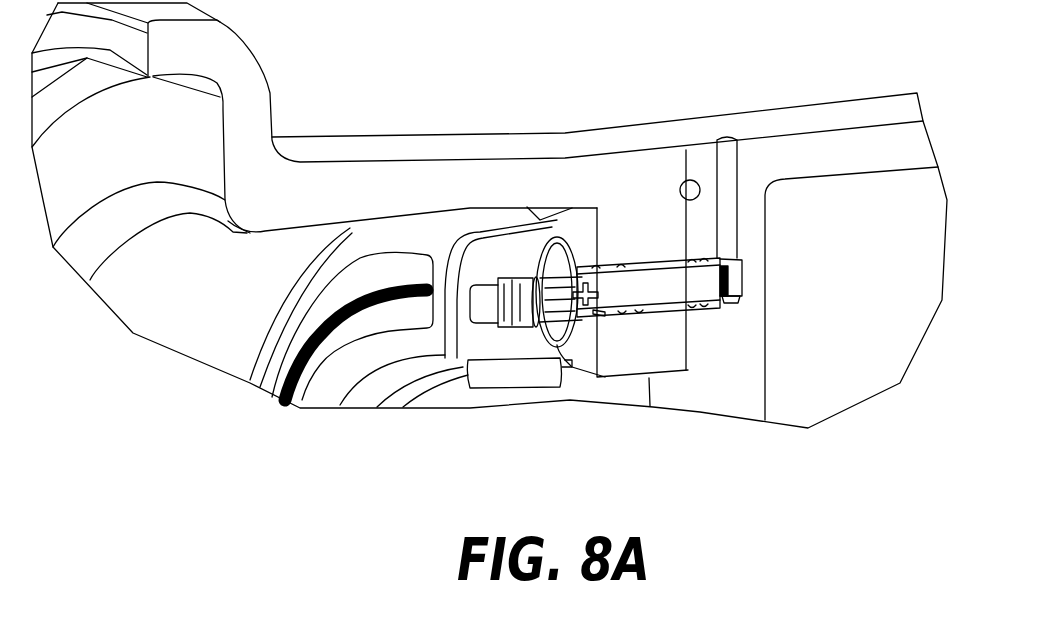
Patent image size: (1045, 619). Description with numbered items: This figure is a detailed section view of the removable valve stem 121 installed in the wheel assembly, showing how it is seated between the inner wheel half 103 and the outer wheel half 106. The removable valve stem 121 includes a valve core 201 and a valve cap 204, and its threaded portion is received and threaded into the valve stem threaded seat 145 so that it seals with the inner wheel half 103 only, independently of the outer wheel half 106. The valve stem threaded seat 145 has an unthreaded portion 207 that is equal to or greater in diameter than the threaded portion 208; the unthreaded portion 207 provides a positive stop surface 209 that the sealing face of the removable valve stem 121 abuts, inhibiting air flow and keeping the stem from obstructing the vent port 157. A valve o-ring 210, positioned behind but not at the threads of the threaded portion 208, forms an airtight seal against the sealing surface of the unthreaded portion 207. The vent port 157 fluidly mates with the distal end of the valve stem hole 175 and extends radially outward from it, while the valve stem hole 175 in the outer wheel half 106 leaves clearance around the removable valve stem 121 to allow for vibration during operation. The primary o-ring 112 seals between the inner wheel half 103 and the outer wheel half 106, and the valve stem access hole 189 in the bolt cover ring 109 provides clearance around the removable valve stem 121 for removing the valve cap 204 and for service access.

The inner wheel half 103 is at (877, 65).
The outer wheel half 106 is at (603, 400).
The bolt cover ring 109 is at (470, 430).
The primary o-ring 112 is at (693, 182).
The removable valve stem 121 is at (640, 232).
The valve stem threaded seat 145 is at (740, 298).
The vent port 157 is at (735, 148).
The valve stem hole 175 is at (637, 303).
The valve stem access hole 189 is at (442, 341).
The valve core 201 is at (565, 280).
The valve cap 204 is at (492, 278).
The unthreaded portion 207 is at (690, 306).
The threaded portion 208 is at (720, 258).
The positive stop surface 209 is at (690, 302).
The valve o-ring 210 is at (700, 257).